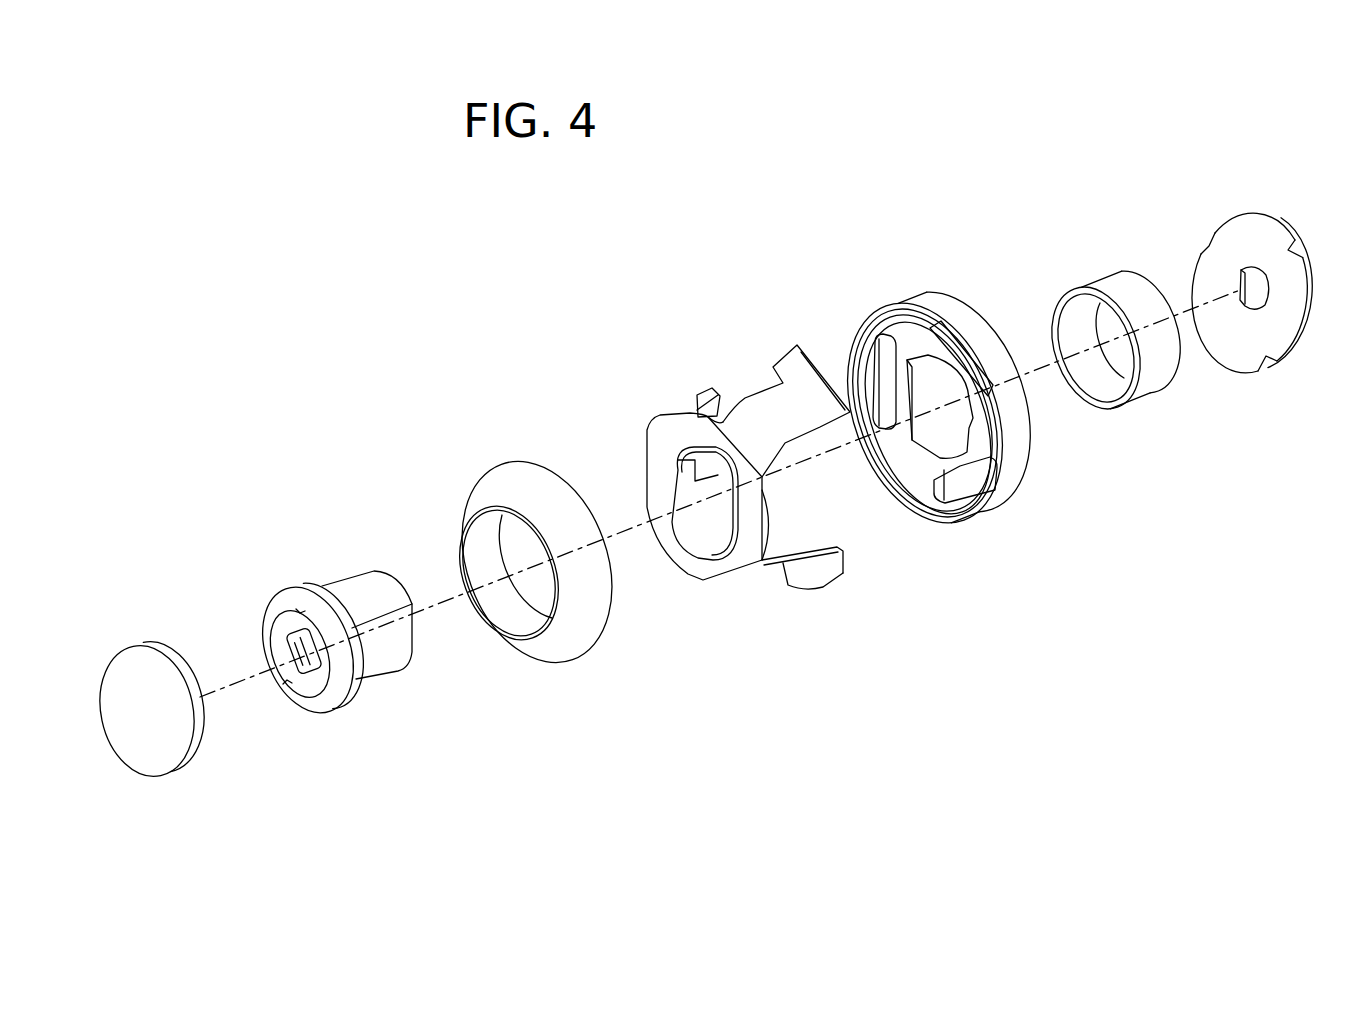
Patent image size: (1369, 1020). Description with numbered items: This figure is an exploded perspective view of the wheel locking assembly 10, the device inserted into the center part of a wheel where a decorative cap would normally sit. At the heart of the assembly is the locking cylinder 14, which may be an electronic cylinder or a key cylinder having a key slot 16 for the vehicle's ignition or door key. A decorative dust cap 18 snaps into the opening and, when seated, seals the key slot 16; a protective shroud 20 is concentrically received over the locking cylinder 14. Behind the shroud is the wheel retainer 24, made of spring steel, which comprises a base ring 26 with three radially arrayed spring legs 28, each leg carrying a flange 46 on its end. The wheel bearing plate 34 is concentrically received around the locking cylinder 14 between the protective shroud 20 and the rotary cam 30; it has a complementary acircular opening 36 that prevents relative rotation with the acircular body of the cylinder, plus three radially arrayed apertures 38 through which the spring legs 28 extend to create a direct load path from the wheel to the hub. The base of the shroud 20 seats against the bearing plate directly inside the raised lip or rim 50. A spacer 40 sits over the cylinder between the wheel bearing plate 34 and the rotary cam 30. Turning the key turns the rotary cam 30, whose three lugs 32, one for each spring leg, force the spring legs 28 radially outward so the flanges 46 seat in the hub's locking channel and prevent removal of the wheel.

The wheel locking assembly 10 is at (292, 401).
The locking cylinder 14 is at (297, 605).
The key slot 16 is at (300, 647).
The dust cap 18 is at (120, 666).
The protective shroud 20 is at (553, 648).
The wheel retainer 24 is at (734, 505).
The base ring 26 is at (690, 563).
The spring legs 28 is at (690, 463).
The rotary cam 30 is at (1221, 294).
The lugs 32 is at (1200, 247).
The wheel bearing plate 34 is at (974, 398).
The acircular opening 36 is at (920, 450).
The apertures 38 is at (872, 330).
The spacer 40 is at (1150, 388).
The flanges 46 is at (700, 403).
The rim 50 is at (905, 300).